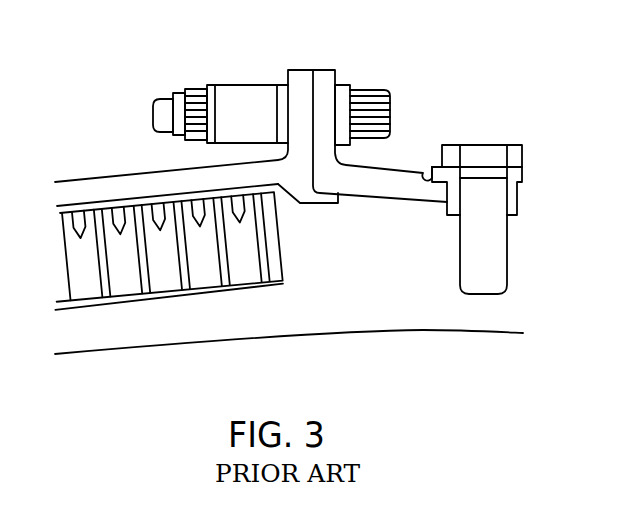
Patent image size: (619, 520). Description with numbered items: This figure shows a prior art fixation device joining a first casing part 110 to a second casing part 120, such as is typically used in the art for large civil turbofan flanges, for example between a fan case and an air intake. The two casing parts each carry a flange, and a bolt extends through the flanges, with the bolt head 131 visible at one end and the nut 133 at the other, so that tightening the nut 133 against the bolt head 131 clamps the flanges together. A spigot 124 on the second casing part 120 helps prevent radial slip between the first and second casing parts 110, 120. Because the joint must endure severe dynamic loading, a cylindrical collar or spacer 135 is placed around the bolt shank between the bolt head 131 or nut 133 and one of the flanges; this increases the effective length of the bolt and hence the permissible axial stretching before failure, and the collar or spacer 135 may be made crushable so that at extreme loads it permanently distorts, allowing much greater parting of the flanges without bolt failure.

The first casing part 110 is at (400, 168).
The second casing part 120 is at (117, 177).
The spigot 124 is at (325, 201).
The bolt head 131 is at (392, 92).
The nut 133 is at (185, 93).
The collar or spacer 135 is at (253, 87).